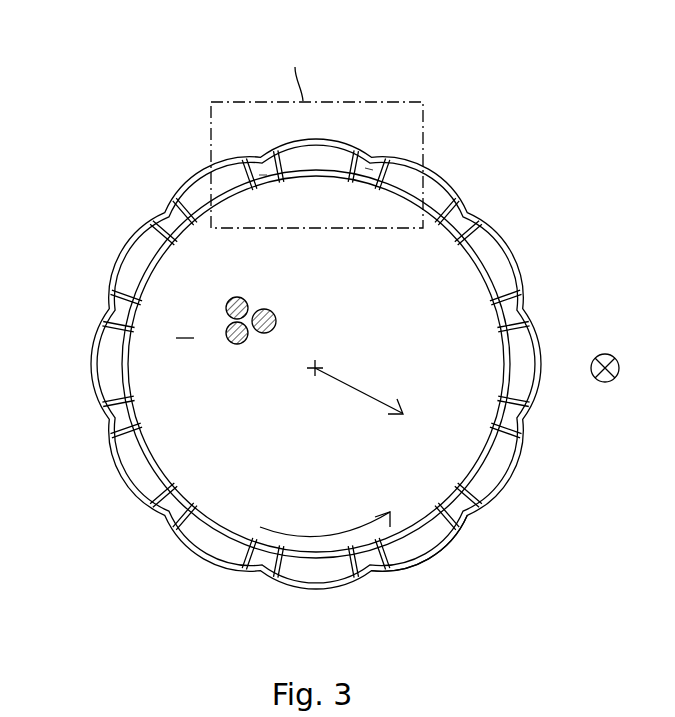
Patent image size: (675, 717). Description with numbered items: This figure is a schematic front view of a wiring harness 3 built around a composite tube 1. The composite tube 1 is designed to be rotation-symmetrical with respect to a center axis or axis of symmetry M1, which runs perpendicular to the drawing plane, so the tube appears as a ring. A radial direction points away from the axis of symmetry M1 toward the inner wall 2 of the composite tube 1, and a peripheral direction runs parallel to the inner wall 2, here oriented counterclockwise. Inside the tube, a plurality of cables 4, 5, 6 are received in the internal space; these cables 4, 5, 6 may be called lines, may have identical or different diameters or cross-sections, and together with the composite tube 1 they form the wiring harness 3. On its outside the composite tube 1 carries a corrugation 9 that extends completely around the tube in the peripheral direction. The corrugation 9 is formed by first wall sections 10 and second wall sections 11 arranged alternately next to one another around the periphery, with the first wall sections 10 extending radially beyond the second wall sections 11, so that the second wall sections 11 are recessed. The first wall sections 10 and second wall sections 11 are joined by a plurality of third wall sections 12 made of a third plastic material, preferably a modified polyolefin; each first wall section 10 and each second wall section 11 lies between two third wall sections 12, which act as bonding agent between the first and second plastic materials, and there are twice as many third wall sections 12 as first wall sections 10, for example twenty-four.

The composite tube 1 is at (521, 283).
The inner wall 2 is at (473, 460).
The wiring harness 3 is at (110, 110).
The cable 4 is at (236, 297).
The cable 5 is at (237, 346).
The cable 6 is at (277, 312).
The corrugation 9 is at (412, 570).
The first wall section 10 is at (197, 193).
The second wall section 11 is at (265, 168).
The third wall section 12 is at (250, 160).
The axis of symmetry M1 is at (312, 372).